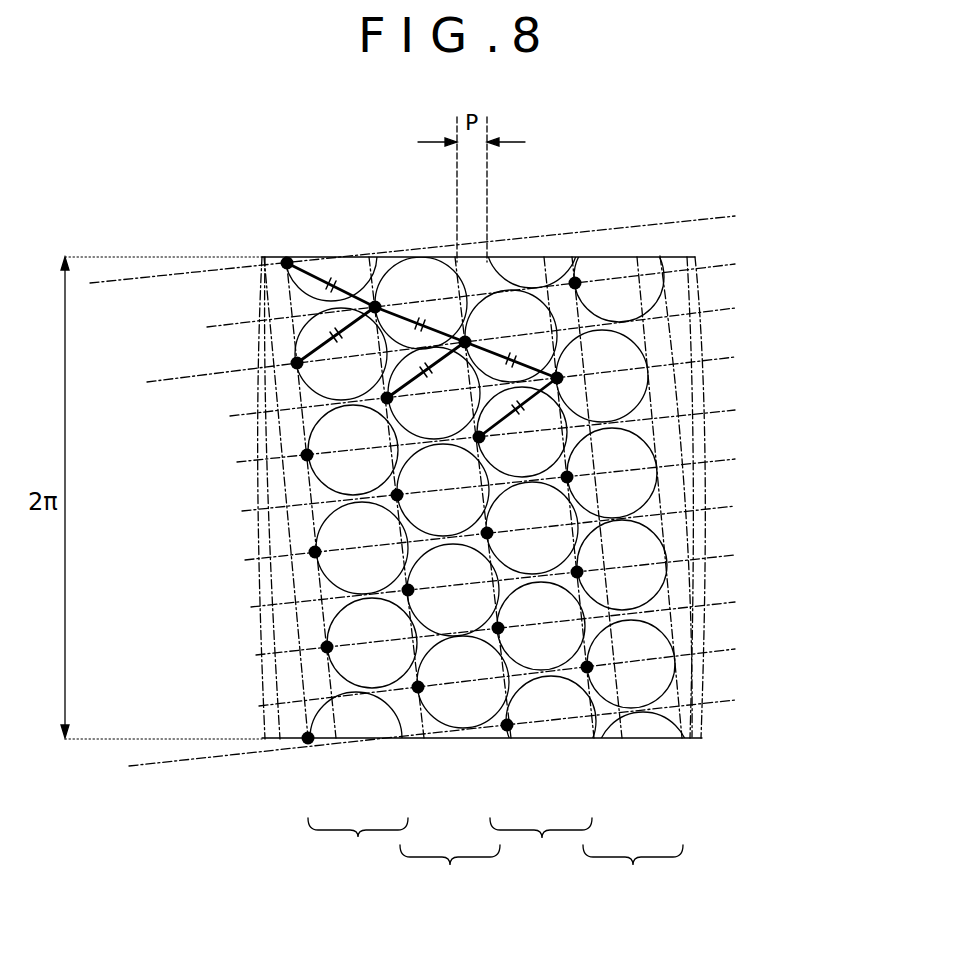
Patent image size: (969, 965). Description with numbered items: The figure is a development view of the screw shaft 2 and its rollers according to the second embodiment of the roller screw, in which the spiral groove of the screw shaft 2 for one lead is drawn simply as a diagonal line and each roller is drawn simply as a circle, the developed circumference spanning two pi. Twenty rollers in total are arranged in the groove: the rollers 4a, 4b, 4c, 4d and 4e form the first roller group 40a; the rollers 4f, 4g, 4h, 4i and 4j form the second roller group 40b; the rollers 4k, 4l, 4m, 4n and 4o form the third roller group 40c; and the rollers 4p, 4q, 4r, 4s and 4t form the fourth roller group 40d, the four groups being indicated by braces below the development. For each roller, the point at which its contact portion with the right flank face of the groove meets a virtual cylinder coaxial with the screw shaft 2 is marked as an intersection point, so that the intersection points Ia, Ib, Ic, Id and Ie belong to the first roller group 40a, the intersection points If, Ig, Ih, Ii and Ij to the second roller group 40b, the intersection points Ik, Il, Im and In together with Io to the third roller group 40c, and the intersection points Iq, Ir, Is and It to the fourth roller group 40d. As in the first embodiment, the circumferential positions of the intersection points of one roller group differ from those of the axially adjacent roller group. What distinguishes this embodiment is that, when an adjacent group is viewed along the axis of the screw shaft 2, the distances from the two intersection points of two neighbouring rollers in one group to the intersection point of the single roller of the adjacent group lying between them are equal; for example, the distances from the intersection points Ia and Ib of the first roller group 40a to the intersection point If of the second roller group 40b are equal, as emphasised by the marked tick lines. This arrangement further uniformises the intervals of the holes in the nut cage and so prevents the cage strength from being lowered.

The screw shaft 2 is at (680, 257).
The roller 4a is at (337, 260).
The roller 4b is at (296, 356).
The roller 4c is at (303, 451).
The roller 4d is at (313, 549).
The roller 4e is at (323, 652).
The roller 4f is at (423, 260).
The roller 4g is at (300, 397).
The roller 4h is at (395, 493).
The roller 4i is at (305, 584).
The roller 4j is at (462, 740).
The roller 4k is at (640, 336).
The roller 4l is at (640, 431).
The roller 4m is at (640, 511).
The roller 4n is at (640, 626).
The roller 4o is at (527, 262).
The roller 4p is at (640, 397).
The roller 4q is at (640, 481).
The roller 4r is at (640, 589).
The roller 4s is at (640, 673).
The roller 4t is at (632, 260).
The first roller group 40a is at (358, 845).
The second roller group 40b is at (450, 871).
The third roller group 40c is at (541, 845).
The fourth roller group 40d is at (633, 871).
The intersection point Ia is at (306, 497).
The intersection point Ib is at (309, 364).
The intersection point Ic is at (318, 455).
The intersection point Id is at (328, 550).
The intersection point Ie is at (339, 644).
The intersection point If is at (385, 305).
The intersection point Ig is at (399, 400).
The intersection point Ih is at (409, 492).
The intersection point Ii is at (417, 589).
The intersection point Ij is at (426, 686).
The intersection point Ik is at (477, 332).
The intersection point Il is at (487, 439).
The intersection point Im is at (503, 529).
The intersection point In is at (510, 625).
The intersection point Io is at (543, 549).
The intersection point Iq is at (579, 474).
The intersection point Ir is at (587, 572).
The intersection point Is is at (598, 665).
The intersection point It is at (586, 282).